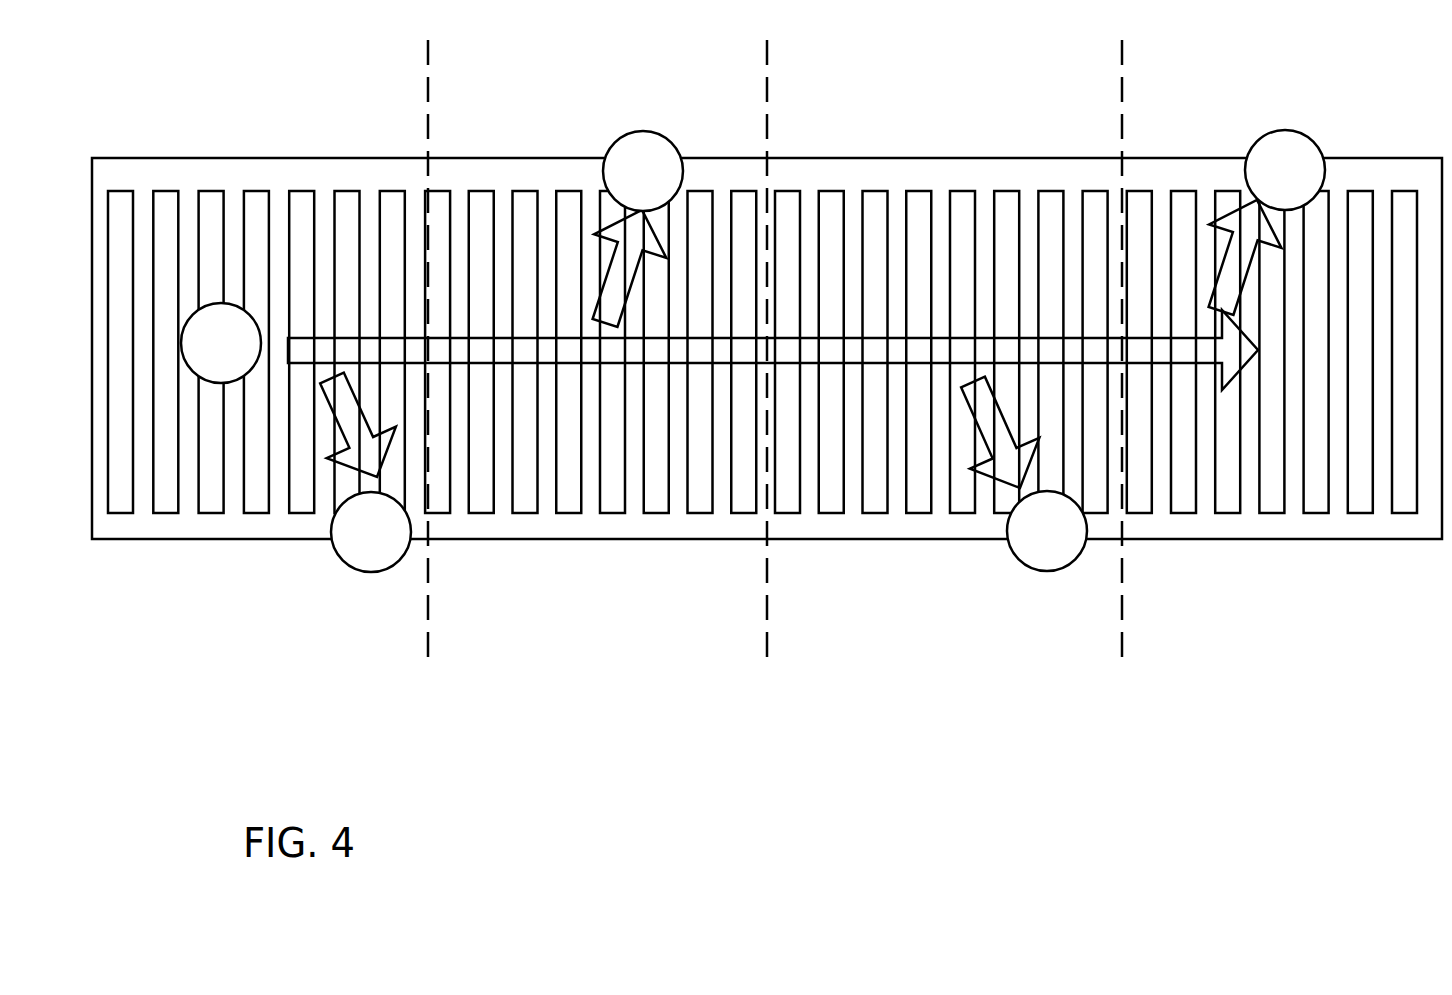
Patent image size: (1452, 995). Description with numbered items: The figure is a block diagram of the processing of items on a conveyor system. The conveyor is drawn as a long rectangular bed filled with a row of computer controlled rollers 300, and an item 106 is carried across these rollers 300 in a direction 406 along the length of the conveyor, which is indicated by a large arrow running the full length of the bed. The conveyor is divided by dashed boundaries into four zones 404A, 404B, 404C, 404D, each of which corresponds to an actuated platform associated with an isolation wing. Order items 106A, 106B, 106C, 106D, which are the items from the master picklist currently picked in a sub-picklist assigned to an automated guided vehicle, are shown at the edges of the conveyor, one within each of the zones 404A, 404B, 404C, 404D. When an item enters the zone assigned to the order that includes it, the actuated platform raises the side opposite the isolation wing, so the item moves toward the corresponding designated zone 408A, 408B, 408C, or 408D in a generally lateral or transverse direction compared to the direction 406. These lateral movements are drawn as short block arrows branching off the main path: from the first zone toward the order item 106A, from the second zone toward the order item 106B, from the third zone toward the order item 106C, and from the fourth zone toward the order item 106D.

The item 106 is at (221, 343).
The order item 106A is at (373, 573).
The order item 106B is at (640, 130).
The order item 106C is at (1047, 569).
The order item 106D is at (1285, 130).
The computer controlled rollers 300 is at (1007, 192).
The zone 404A is at (266, 668).
The zone 404B is at (603, 668).
The zone 404C is at (960, 668).
The zone 404D is at (1310, 678).
The direction 406 is at (773, 350).
The designated zone 408A is at (358, 425).
The designated zone 408B is at (630, 268).
The designated zone 408C is at (1000, 432).
The designated zone 408D is at (1245, 257).